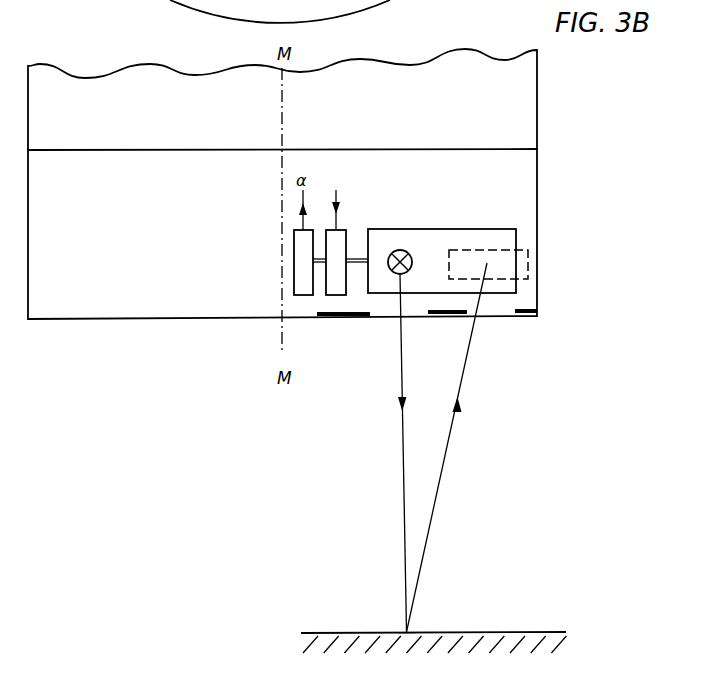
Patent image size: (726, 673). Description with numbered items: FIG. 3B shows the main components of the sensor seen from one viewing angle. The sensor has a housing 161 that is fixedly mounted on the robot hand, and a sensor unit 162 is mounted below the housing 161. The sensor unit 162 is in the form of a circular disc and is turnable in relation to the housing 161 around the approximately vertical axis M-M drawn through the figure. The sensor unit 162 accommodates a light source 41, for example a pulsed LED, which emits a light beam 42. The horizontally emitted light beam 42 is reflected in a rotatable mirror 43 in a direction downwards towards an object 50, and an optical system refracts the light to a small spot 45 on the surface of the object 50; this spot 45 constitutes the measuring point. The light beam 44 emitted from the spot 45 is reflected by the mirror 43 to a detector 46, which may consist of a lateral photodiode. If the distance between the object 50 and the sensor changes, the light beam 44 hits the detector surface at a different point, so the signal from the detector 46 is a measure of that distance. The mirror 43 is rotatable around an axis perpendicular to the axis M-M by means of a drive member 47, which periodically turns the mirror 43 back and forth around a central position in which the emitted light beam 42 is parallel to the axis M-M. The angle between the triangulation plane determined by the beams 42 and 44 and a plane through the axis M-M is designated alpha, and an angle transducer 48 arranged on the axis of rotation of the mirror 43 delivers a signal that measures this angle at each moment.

The housing 161 is at (529, 95).
The sensor unit 162 is at (528, 189).
The light source 41 is at (411, 250).
The light beam 42 is at (400, 384).
The rotatable mirror 43 is at (445, 236).
The light beam 44 is at (453, 435).
The spot 45 is at (410, 630).
The detector 46 is at (522, 248).
The drive member 47 is at (340, 240).
The angle transducer 48 is at (303, 288).
The object 50 is at (526, 641).